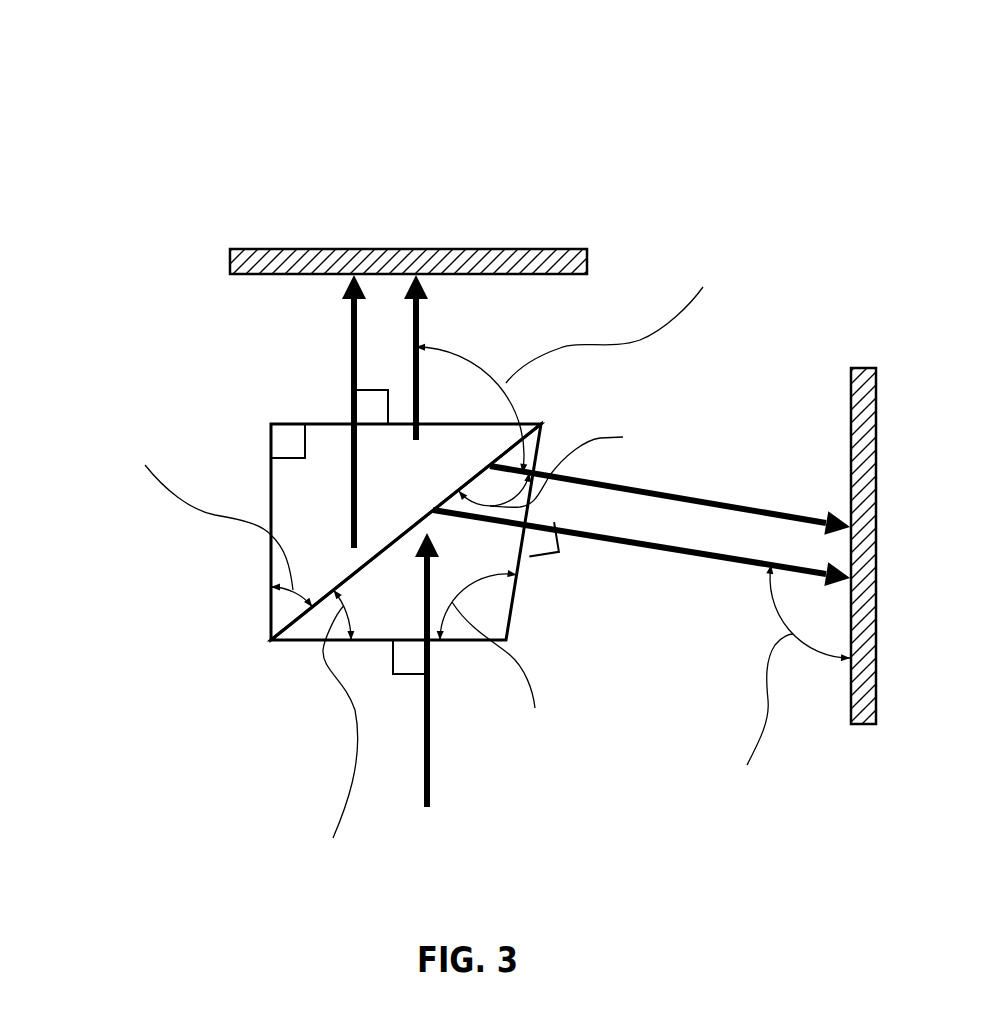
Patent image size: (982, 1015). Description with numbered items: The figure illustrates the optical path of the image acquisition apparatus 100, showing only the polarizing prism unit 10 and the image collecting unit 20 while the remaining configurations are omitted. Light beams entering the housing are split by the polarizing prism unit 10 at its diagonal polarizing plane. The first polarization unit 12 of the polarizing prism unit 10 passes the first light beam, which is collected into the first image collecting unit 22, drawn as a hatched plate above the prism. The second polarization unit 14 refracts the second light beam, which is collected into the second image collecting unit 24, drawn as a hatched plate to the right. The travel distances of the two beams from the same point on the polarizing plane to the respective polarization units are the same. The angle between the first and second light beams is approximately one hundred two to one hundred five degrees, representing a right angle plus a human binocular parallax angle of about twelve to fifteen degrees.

The image acquisition apparatus 100 is at (301, 37).
The polarizing prism unit 10 is at (102, 553).
The first polarization unit 12 is at (271, 556).
The second polarization unit 14 is at (315, 641).
The image collecting unit 20 is at (720, 105).
The first image collecting unit 22 is at (493, 250).
The second image collecting unit 24 is at (861, 368).